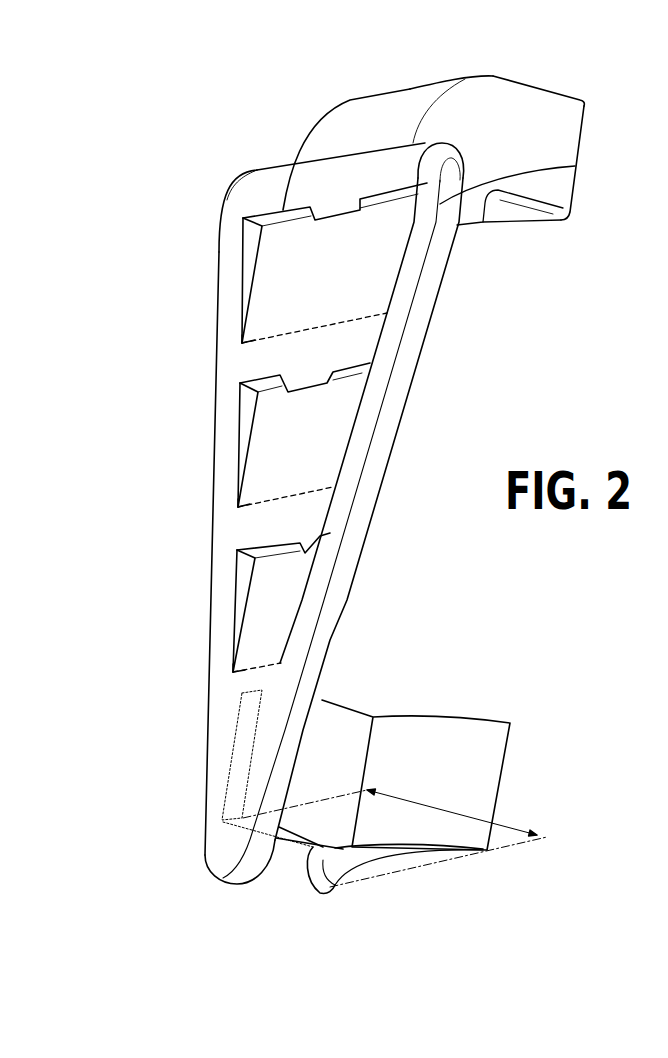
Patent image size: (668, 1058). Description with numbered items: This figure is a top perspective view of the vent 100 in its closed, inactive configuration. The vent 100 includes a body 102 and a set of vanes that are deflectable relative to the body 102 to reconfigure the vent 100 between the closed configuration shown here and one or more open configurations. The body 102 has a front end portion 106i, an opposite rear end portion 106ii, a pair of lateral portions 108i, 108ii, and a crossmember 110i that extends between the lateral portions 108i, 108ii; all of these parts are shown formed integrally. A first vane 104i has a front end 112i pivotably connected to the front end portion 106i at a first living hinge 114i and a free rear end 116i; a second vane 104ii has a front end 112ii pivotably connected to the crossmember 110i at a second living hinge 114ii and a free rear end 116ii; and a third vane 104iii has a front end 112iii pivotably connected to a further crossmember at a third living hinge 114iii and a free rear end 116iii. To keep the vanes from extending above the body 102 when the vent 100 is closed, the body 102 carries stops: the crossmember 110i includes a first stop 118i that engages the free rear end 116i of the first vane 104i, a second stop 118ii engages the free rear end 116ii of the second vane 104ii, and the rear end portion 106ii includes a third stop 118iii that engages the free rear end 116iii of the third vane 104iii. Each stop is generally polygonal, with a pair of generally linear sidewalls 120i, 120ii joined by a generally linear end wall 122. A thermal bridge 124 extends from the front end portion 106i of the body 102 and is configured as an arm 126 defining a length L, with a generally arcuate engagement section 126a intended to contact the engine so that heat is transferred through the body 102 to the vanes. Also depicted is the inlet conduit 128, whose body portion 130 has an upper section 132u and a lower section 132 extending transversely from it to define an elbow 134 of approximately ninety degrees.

The vent 100 is at (258, 160).
The body 102 is at (216, 456).
The first vane 104i is at (266, 636).
The second vane 104ii is at (316, 438).
The third vane 104iii is at (381, 254).
The front end portion 106i is at (220, 808).
The rear end portion 106ii is at (283, 185).
The lateral portion 108i is at (220, 605).
The lateral portion 108ii is at (313, 593).
The crossmember 110i is at (365, 364).
The first end of first vane 112i is at (268, 655).
The first end of second vane 112ii is at (315, 472).
The first end of third vane 112iii is at (377, 284).
The first living hinge 114i is at (260, 666).
The second living hinge 114ii is at (270, 503).
The third living hinge 114iii is at (277, 340).
The free rear end of first vane 116i is at (316, 545).
The free rear end of second vane 116ii is at (347, 375).
The free rear end of third vane 116iii is at (418, 160).
The first stop 118i is at (279, 547).
The second stop 118ii is at (308, 374).
The third stop 118iii is at (337, 206).
The sidewall 120i is at (283, 210).
The sidewall 120ii is at (575, 166).
The end wall 122 is at (333, 217).
The thermal bridge 124 is at (298, 892).
The arm 126 is at (322, 811).
The engagement section 126a is at (453, 760).
The inlet conduit 128 is at (465, 63).
The body portion 130 is at (496, 72).
The lower section 132 is at (556, 128).
The upper section 132u is at (407, 112).
The elbow 134 is at (488, 156).